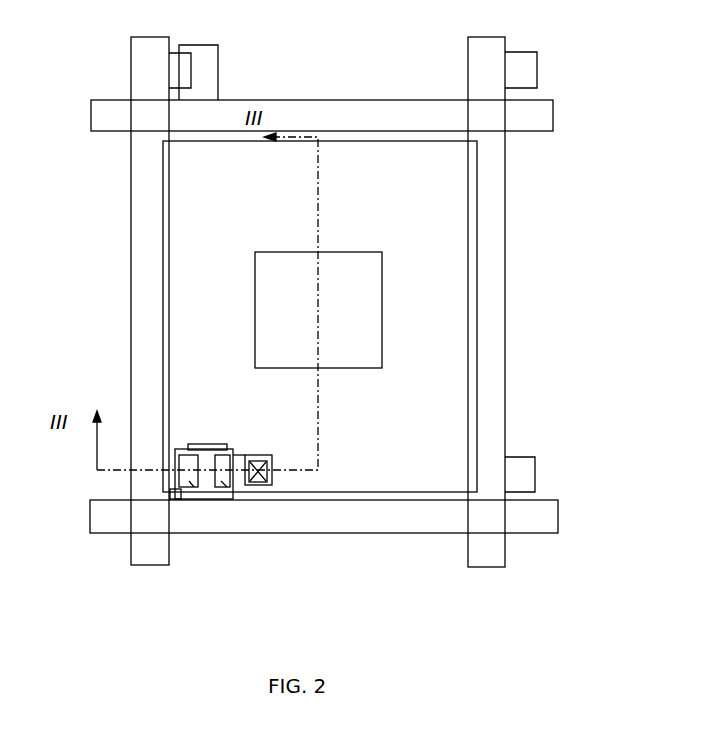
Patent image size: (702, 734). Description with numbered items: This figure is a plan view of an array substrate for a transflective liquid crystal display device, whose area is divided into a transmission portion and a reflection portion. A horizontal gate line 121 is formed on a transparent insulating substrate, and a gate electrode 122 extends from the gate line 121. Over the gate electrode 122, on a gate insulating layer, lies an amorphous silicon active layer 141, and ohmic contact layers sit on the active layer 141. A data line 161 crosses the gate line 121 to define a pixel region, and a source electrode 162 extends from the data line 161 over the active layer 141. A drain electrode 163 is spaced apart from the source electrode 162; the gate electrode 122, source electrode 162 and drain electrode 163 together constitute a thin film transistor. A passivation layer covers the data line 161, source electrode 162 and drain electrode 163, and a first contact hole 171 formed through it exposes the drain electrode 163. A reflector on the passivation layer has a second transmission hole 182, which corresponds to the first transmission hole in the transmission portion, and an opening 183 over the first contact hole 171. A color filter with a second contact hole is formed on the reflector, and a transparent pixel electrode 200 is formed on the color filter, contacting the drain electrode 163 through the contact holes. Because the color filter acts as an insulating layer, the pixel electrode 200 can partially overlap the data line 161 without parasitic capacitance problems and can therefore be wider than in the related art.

The gate line 121 is at (330, 100).
The gate electrode 122 is at (207, 445).
The active layer 141 is at (207, 499).
The data line 161 is at (131, 305).
The source electrode 162 is at (183, 499).
The drain electrode 163 is at (228, 499).
The first contact hole 171 is at (274, 461).
The second transmission hole 182 is at (257, 449).
The opening 183 is at (348, 374).
The pixel electrode 200 is at (163, 206).